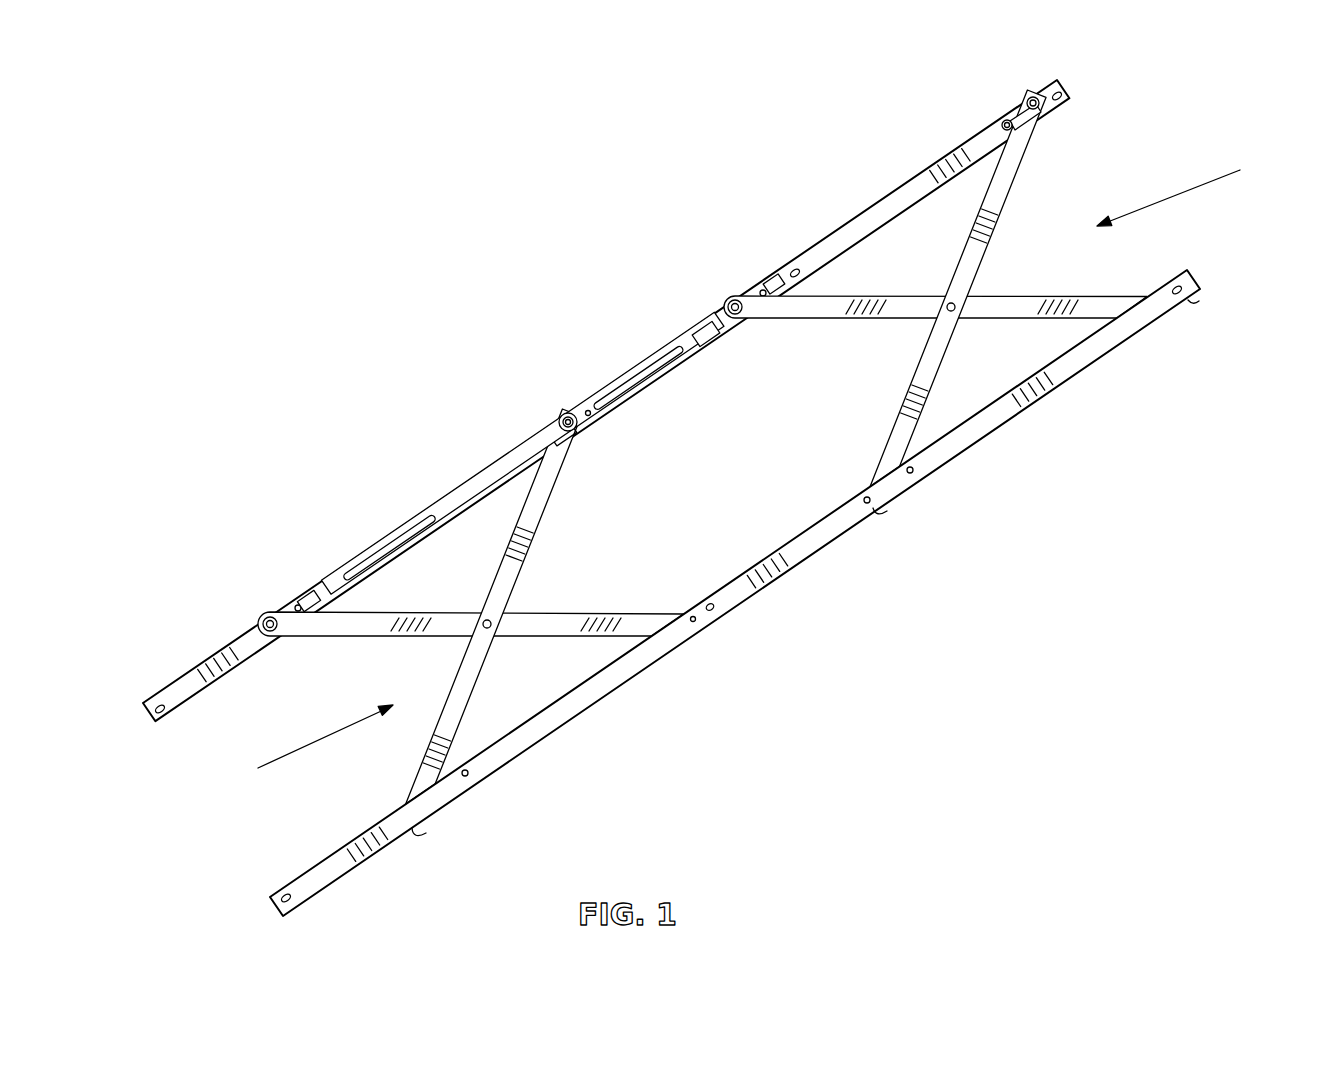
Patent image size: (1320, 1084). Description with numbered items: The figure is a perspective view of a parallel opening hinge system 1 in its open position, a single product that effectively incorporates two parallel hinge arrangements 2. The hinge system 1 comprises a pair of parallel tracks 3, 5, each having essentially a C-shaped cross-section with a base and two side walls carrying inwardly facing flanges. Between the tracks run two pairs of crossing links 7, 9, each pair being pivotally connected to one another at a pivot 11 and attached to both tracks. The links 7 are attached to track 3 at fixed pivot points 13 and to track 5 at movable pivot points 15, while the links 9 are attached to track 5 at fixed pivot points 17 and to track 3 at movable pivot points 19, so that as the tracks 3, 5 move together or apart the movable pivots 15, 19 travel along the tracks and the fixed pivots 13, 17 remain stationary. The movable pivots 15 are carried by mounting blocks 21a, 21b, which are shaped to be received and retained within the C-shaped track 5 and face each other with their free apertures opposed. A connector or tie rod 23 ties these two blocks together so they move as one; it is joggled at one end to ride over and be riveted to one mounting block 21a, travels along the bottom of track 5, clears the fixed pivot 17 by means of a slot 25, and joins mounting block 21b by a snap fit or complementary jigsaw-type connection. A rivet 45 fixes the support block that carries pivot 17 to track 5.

The parallel opening hinge system 1 is at (703, 494).
The parallel hinge arrangement 2 is at (1082, 500).
The track 3 is at (792, 555).
The track 5 is at (535, 440).
The crossing link 7 is at (372, 632).
The crossing link 9 is at (470, 682).
The pivot 11 is at (495, 622).
The fixed pivot point 13 is at (695, 622).
The movable pivot point 15 is at (268, 615).
The fixed pivot point 17 is at (568, 418).
The movable pivot point 19 is at (420, 837).
The mounting block 21a is at (722, 322).
The mounting block 21b is at (330, 592).
The connector 23 is at (482, 488).
The slot 25 is at (402, 542).
The rivet 45 is at (1007, 120).